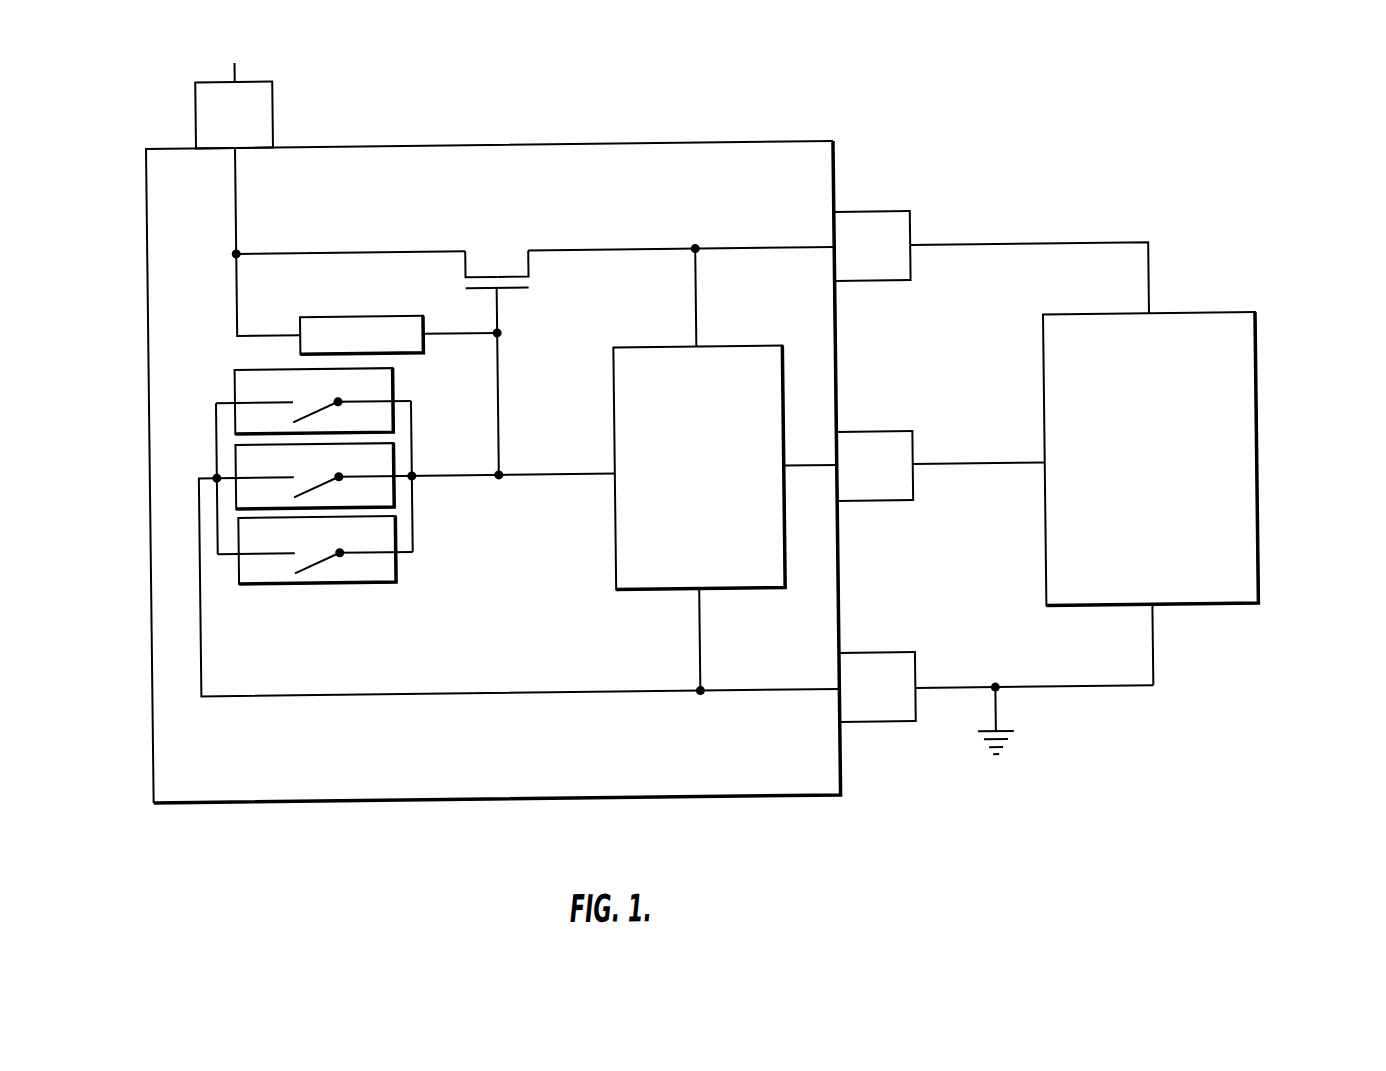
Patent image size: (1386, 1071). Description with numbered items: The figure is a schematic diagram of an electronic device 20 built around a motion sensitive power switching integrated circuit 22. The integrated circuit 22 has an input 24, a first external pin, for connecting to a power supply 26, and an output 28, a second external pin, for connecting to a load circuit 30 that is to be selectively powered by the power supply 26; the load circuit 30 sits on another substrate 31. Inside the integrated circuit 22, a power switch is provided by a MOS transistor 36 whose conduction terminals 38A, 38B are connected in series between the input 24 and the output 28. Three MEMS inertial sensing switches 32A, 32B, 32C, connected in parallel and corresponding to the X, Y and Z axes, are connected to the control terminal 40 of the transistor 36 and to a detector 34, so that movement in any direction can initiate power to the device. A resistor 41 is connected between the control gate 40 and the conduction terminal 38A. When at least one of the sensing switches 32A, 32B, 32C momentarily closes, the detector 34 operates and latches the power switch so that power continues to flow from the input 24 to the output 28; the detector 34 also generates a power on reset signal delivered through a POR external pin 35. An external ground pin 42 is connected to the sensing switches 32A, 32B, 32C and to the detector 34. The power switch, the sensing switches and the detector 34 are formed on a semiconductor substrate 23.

The electronic device 20 is at (999, 103).
The motion sensitive power switching integrated circuit 22 is at (813, 146).
The semiconductor substrate 23 is at (143, 765).
The input 24 is at (274, 112).
The power supply 26 is at (191, 43).
The output 28 is at (879, 219).
The load circuit 30 is at (1253, 581).
The another substrate 31 is at (1205, 616).
The MEMS inertial sensing switch 32A is at (232, 418).
The MEMS inertial sensing switch 32B is at (232, 499).
The MEMS inertial sensing switch 32C is at (234, 573).
The detector 34 is at (748, 595).
The POR external pin 35 is at (896, 492).
The transistor 36 is at (502, 277).
The conduction terminal 38A is at (456, 254).
The conduction terminal 38B is at (541, 255).
The control terminal 40 is at (493, 296).
The resistor 41 is at (298, 345).
The external ground pin 42 is at (870, 731).